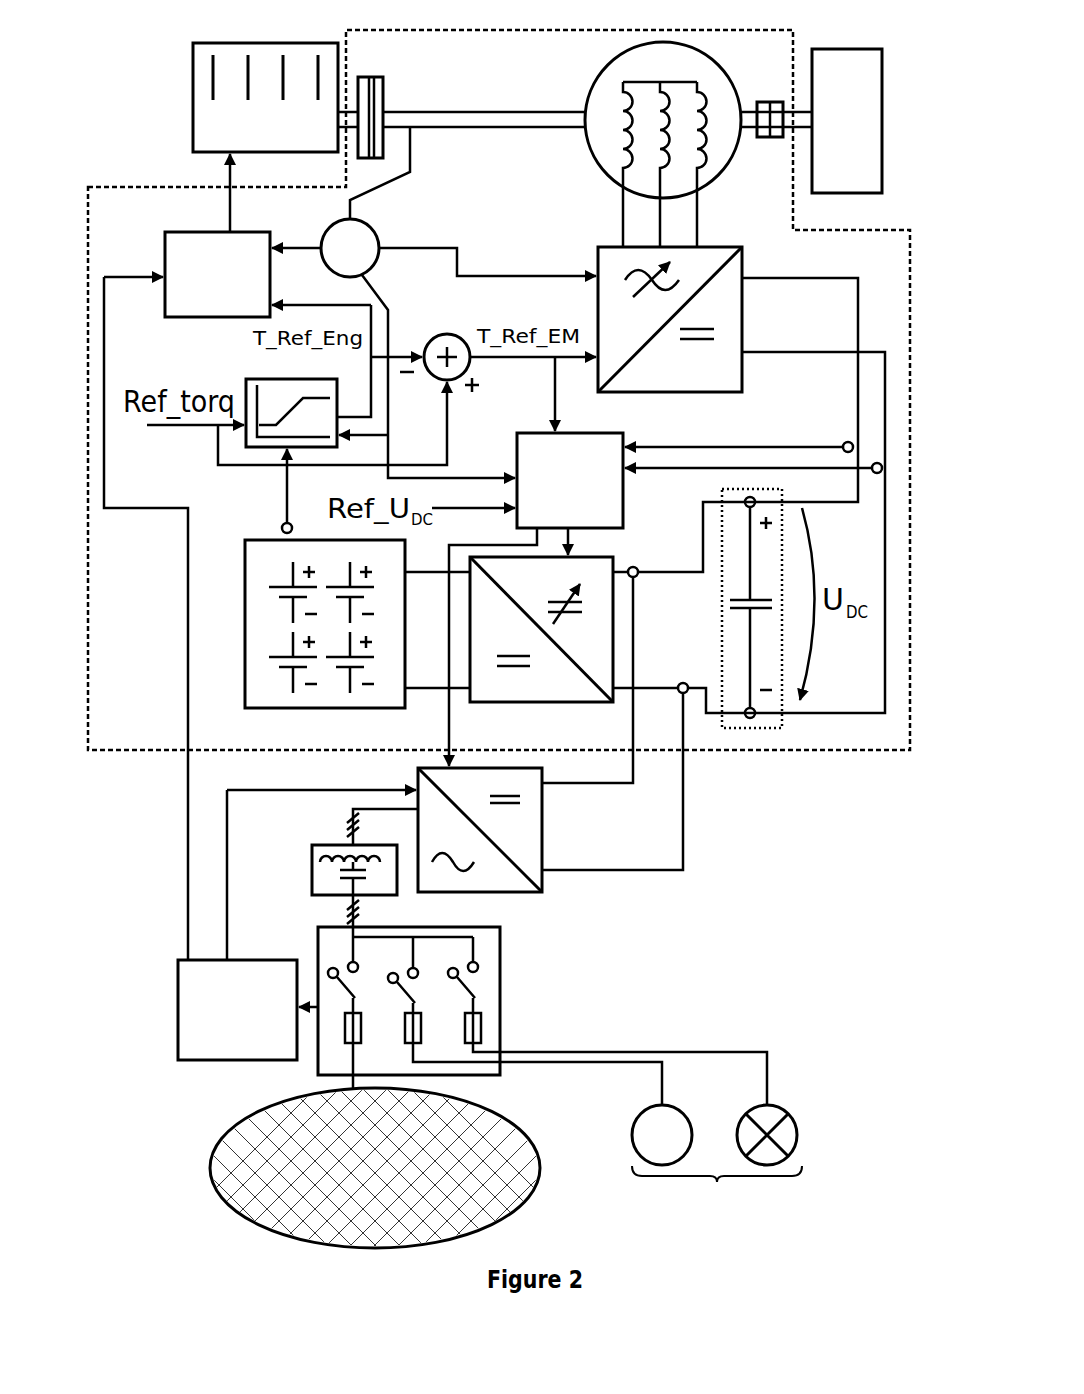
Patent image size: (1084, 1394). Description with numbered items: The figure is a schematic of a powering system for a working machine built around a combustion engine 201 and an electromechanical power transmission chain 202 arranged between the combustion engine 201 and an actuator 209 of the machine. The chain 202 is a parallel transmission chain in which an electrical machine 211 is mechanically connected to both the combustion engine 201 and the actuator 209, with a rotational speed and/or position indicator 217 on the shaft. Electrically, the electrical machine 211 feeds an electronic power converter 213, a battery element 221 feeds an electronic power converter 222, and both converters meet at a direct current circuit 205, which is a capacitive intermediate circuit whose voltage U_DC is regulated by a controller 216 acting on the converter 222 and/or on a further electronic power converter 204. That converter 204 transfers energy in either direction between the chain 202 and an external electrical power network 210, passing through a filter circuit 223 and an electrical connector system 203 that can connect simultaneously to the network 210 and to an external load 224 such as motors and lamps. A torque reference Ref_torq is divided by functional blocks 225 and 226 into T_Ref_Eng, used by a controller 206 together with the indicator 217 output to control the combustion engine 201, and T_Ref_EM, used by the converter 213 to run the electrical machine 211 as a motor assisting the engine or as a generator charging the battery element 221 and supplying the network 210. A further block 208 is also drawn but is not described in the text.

The combustion engine 201 is at (298, 141).
The electromechanical power transmission chain 202 is at (530, 208).
The electrical connector system 203 is at (318, 945).
The electronic power converter 204 is at (500, 892).
The direct current circuit 205 is at (722, 653).
The controller 206 is at (235, 287).
The auxiliary controller 208 is at (255, 1017).
The actuator 209 is at (865, 131).
The external electrical power network 210 is at (395, 1181).
The electrical machine 211 is at (585, 95).
The electronic power converter 213 is at (652, 392).
The controller 216 is at (588, 491).
The rotational speed and/or position indicator 217 is at (368, 260).
The battery element 221 is at (333, 708).
The electronic power converter 222 is at (570, 702).
The filter circuit 223 is at (312, 873).
The external load 224 is at (717, 1157).
The functional block 225 is at (275, 379).
The functional block 226 is at (447, 334).